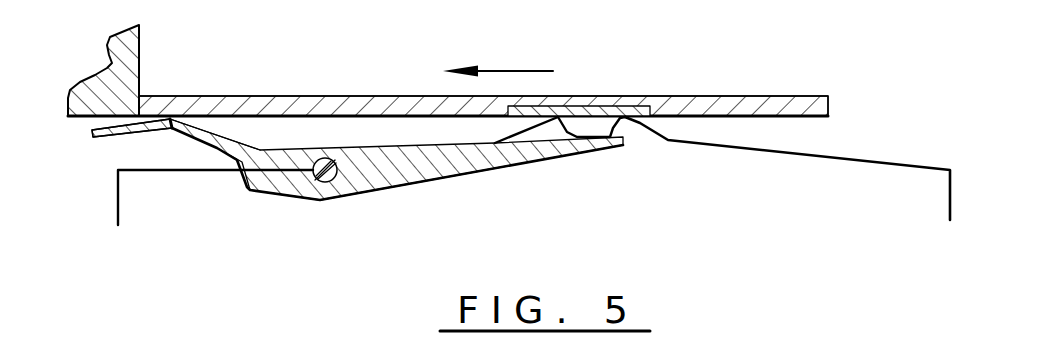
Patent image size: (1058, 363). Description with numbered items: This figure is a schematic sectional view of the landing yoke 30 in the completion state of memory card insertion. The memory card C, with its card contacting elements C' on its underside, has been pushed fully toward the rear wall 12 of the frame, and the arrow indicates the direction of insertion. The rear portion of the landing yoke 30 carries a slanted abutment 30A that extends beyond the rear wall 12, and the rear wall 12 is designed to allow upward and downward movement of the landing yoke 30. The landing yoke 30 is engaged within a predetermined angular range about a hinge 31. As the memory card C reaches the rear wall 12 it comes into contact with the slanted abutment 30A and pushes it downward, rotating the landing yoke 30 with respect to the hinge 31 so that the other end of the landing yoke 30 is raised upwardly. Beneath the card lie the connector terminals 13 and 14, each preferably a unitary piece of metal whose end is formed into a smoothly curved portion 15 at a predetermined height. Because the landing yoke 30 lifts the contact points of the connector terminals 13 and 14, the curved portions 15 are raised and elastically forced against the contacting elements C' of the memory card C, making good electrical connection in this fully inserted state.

The rear wall 12 is at (140, 63).
The connector terminal 13 is at (950, 208).
The connector terminal 14 is at (118, 199).
The curved portion 15 is at (625, 120).
The landing yoke 30 is at (415, 172).
The slanted abutment 30A is at (217, 130).
The hinge 31 is at (318, 178).
The memory card C is at (448, 75).
The card contacting element C' is at (584, 75).